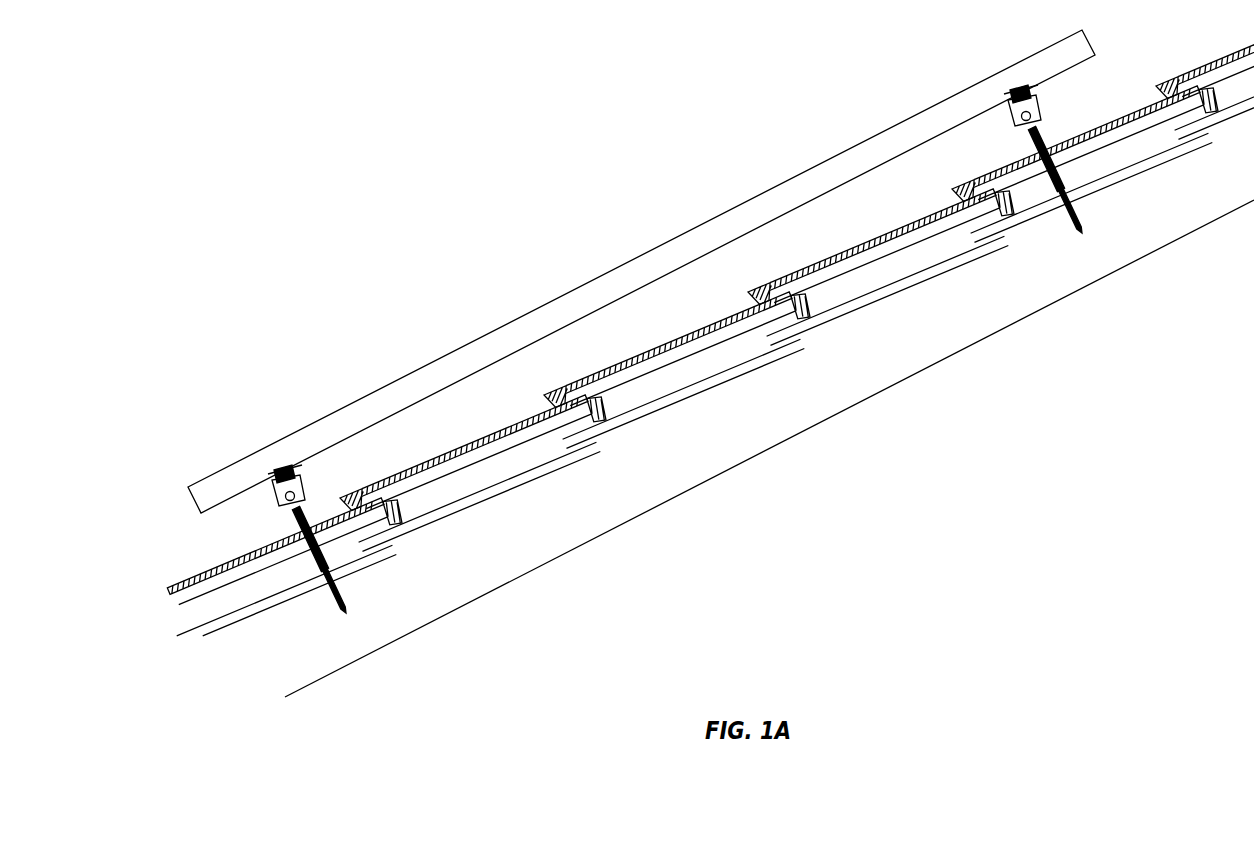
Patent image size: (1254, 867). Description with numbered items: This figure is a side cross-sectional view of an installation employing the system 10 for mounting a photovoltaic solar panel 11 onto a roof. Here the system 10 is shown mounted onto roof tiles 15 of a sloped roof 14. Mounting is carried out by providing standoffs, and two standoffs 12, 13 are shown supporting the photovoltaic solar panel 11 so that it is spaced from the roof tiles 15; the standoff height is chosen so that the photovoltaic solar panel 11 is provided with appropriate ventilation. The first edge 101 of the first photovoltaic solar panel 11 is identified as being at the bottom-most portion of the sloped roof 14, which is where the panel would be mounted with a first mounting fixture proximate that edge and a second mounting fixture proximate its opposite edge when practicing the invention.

The system 10 is at (407, 291).
The photovoltaic solar panel 11 is at (648, 268).
The standoff 12 is at (318, 556).
The standoff 13 is at (1052, 182).
The sloped roof 14 is at (759, 432).
The roof tiles 15 is at (270, 551).
The first edge 101 is at (212, 541).